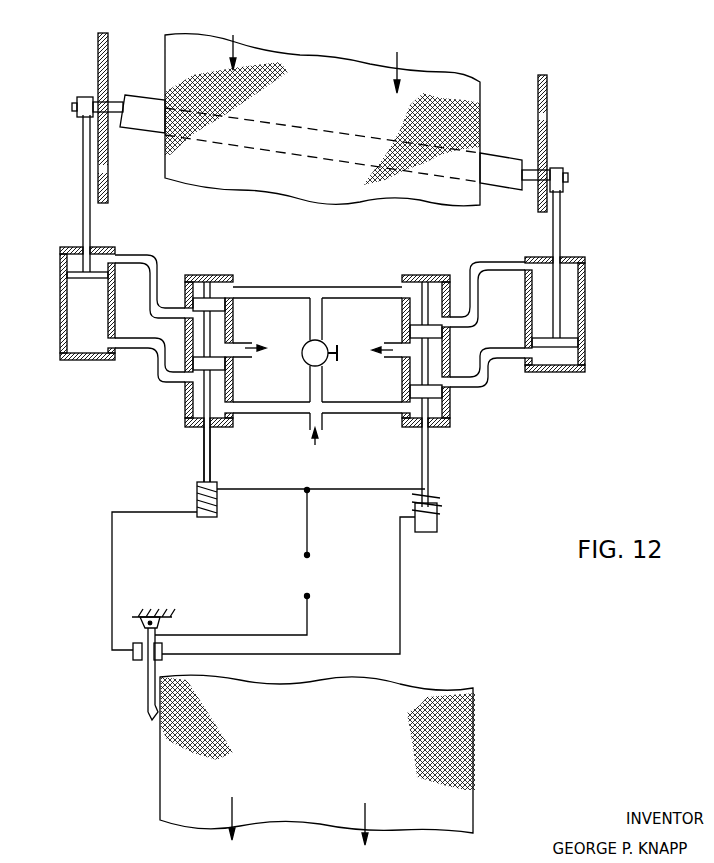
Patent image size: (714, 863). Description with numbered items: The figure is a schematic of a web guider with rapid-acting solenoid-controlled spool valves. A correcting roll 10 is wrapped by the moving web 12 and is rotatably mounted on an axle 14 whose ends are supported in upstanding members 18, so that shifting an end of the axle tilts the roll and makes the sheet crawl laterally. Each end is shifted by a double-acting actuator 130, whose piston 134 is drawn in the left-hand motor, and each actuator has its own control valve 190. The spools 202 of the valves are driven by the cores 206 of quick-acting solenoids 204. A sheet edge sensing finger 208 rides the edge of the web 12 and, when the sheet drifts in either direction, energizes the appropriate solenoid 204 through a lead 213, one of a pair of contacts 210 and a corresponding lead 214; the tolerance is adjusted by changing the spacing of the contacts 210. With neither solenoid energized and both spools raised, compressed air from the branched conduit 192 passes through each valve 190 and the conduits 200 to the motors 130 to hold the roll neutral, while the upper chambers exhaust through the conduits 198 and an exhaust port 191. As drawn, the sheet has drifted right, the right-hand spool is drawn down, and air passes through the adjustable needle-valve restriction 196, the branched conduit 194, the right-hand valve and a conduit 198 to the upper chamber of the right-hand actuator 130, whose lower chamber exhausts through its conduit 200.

The correcting roll 10 is at (492, 166).
The web 12 is at (432, 80).
The axle 14 is at (537, 178).
The upstanding members 18 is at (548, 96).
The double-acting actuator 130 is at (61, 313).
The piston 134 is at (83, 275).
The control valve 190 is at (218, 277).
The exhaust port 191 is at (246, 352).
The branched conduit 192 is at (290, 410).
The branched conduit 194 is at (312, 318).
The restriction 196 is at (326, 362).
The conduit 198 is at (147, 255).
The conduit 200 is at (168, 378).
The spool 202 is at (204, 457).
The solenoid 204 is at (218, 500).
The core 206 is at (197, 488).
The sheet edge sensing finger 208 is at (137, 690).
The contacts 210 is at (134, 655).
The lead 213 is at (256, 636).
The leads 214 is at (112, 586).